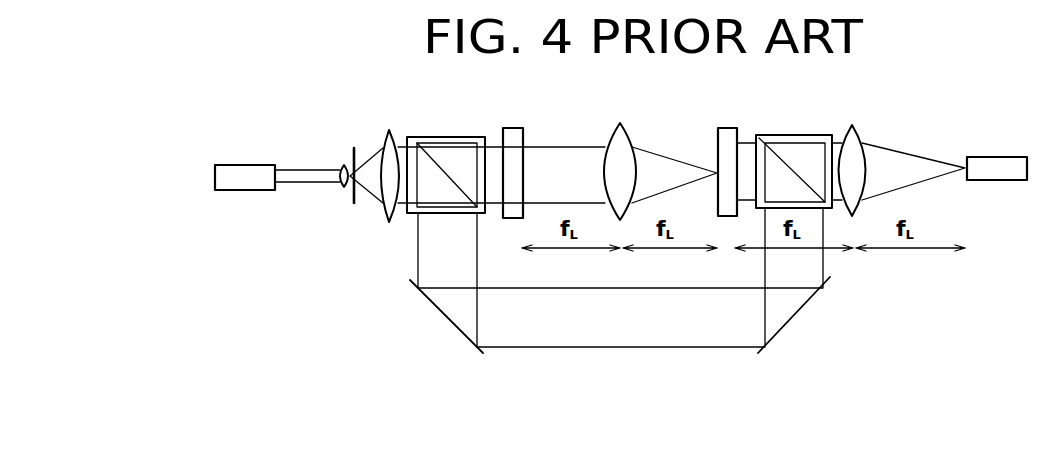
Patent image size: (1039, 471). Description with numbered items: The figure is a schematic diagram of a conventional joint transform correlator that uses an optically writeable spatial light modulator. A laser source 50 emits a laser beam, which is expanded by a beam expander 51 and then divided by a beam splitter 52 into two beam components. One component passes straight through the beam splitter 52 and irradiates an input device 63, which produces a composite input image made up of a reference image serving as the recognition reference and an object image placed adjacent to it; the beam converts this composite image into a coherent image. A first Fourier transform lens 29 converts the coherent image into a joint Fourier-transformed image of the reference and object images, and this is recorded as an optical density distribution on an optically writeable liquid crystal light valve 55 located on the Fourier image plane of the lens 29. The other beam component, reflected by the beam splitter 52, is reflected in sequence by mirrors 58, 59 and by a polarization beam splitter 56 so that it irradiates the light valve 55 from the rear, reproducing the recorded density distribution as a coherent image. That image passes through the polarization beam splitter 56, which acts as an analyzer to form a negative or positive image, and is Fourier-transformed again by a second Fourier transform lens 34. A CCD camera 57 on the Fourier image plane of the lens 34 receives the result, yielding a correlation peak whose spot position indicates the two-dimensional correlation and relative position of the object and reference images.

The laser source 50 is at (240, 165).
The beam expander 51 is at (357, 150).
The beam splitter 52 is at (452, 139).
The input device 63 is at (513, 131).
The first Fourier transform lens 29 is at (623, 138).
The optically writeable liquid crystal light valve 55 is at (728, 131).
The polarization beam splitter 56 is at (796, 137).
The second Fourier transform lens 34 is at (855, 140).
The CCD camera 57 is at (1000, 157).
The mirror 58 is at (452, 330).
The mirror 59 is at (797, 316).